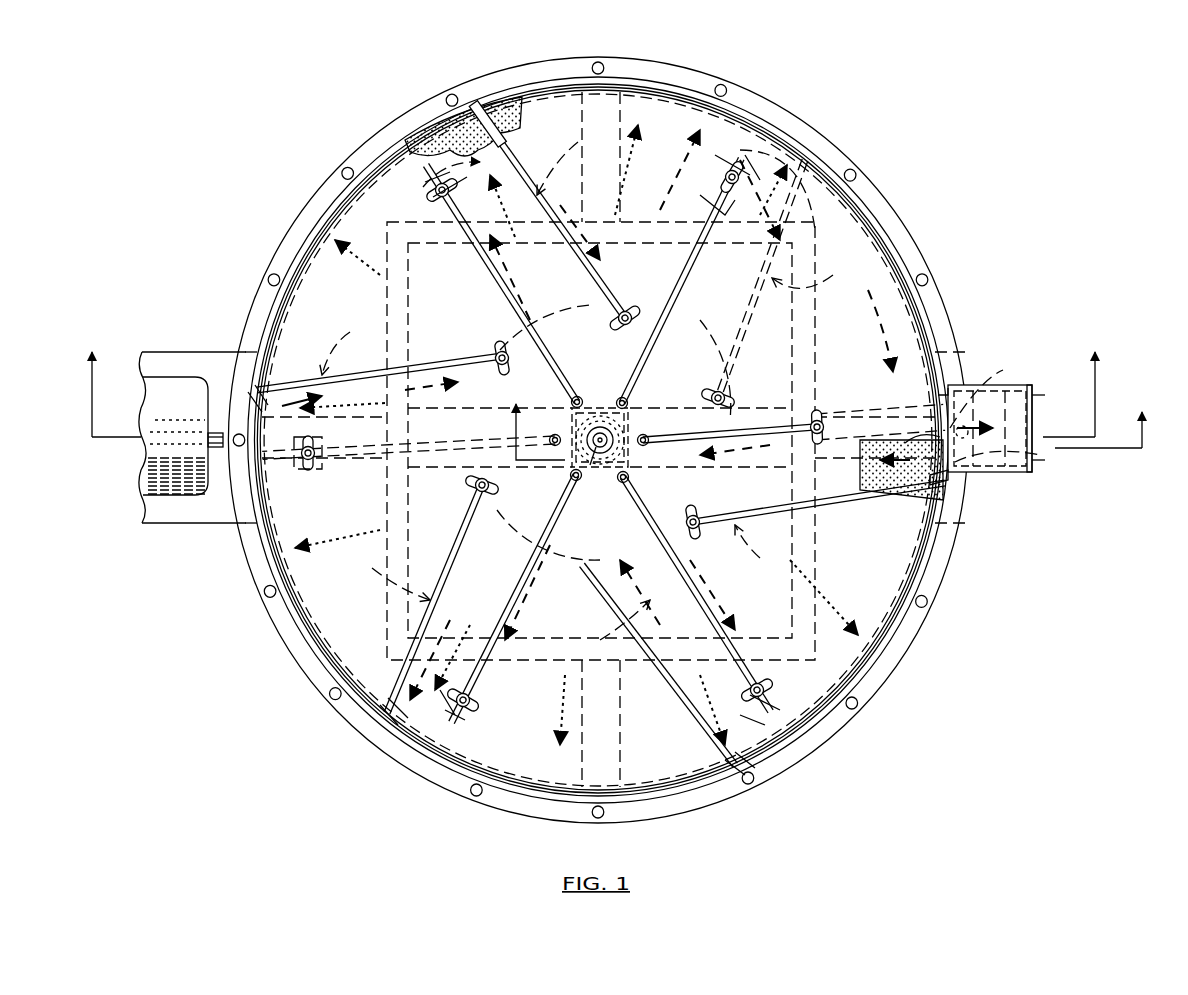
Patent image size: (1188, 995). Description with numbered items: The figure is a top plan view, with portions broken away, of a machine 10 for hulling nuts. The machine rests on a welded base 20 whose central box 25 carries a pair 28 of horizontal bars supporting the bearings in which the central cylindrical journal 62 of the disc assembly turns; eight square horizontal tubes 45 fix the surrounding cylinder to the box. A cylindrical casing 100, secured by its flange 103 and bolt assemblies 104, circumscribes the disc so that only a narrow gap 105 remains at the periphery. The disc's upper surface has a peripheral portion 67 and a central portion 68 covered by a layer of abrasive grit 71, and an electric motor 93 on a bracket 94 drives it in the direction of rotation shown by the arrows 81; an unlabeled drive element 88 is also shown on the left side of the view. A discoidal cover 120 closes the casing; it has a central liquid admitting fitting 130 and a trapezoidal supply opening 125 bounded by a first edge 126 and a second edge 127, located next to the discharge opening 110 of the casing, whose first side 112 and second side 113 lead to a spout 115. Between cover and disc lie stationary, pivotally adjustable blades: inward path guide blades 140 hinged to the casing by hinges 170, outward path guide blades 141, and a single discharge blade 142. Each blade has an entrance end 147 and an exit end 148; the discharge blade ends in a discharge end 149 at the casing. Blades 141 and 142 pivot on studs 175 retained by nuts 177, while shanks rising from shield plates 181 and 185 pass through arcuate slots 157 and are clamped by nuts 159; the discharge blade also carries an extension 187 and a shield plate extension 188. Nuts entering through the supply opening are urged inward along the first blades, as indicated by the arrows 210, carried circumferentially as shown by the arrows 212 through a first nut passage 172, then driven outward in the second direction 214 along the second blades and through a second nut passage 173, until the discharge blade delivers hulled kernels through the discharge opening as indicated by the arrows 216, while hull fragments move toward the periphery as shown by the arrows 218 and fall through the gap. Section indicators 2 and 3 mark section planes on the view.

The machine for hulling nuts 10 is at (229, 745).
The base 20 is at (822, 321).
The central box 25 is at (878, 682).
The pair of horizontal bars 28 is at (553, 447).
The square horizontal tubes 45 is at (265, 462).
The central cylindrical journal 62 is at (580, 478).
The peripheral portion 67 is at (665, 120).
The central portion 68 is at (603, 395).
The layer of abrasive grit 71 is at (898, 490).
The direction of rotation arrows 81 is at (905, 285).
The inlet fitting 88 is at (215, 372).
The electric motor 93 is at (170, 460).
The bracket 94 is at (161, 512).
The cylindrical casing 100 is at (940, 535).
The flange 103 is at (265, 625).
The bolt assemblies 104 is at (357, 722).
The gap 105 is at (497, 85).
The discharge opening 110 is at (955, 385).
The first side 112 is at (1040, 455).
The second side 113 is at (936, 395).
The spout 115 is at (1015, 380).
The discoidal cover 120 is at (673, 156).
The supply opening 125 is at (905, 502).
The first edge 126 is at (900, 440).
The second edge 127 is at (950, 480).
The liquid admitting fitting 130 is at (592, 432).
The inward path guide blades 140 is at (607, 392).
The outward path guide blades 141 is at (525, 280).
The discharge blade 142 is at (735, 470).
The entrance end 147 is at (818, 232).
The exit end 148 is at (775, 120).
The discharge end 149 is at (1005, 385).
The arcuate slot 157 is at (425, 195).
The nut 159 is at (720, 178).
The hinge 170 is at (475, 112).
The first nut passage 172 is at (574, 478).
The second nut passage 173 is at (392, 152).
The screw-threaded stud 175 is at (648, 445).
The nut 177 is at (623, 483).
The shield plate 181 is at (718, 200).
The shield plate 185 is at (807, 390).
The extension 187 is at (872, 485).
The extension 188 is at (885, 392).
The first direction arrows 210 is at (450, 588).
The circumferential direction arrows 212 is at (395, 165).
The second direction 214 is at (531, 385).
The discharge arrows 216 is at (1035, 398).
The fragment movement arrows 218 is at (595, 440).
The section line 2 is at (593, 383).
The section line 3 is at (830, 415).